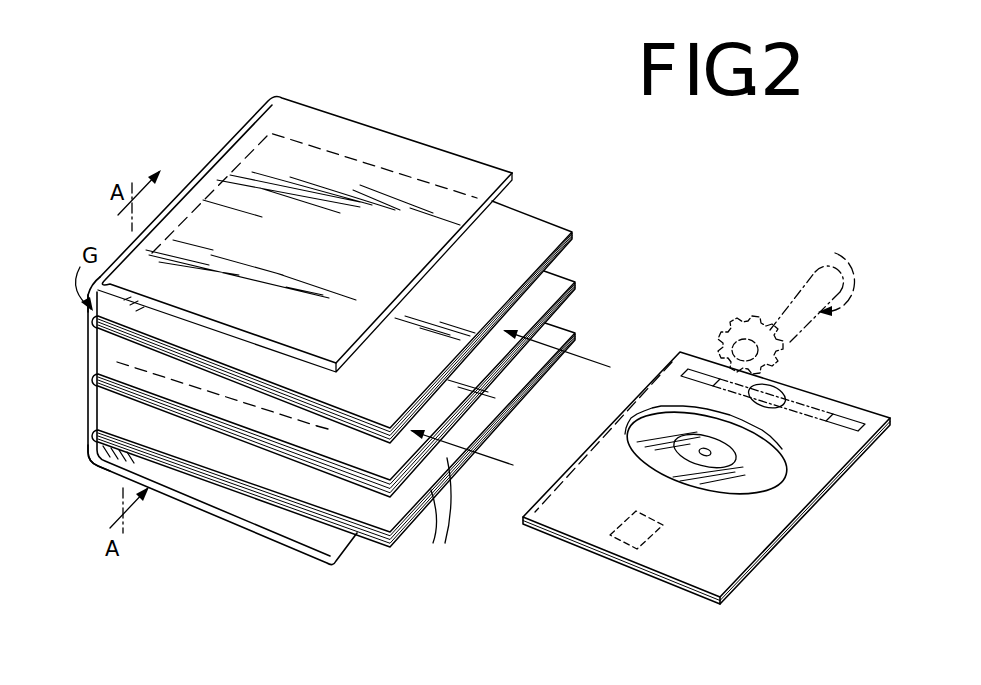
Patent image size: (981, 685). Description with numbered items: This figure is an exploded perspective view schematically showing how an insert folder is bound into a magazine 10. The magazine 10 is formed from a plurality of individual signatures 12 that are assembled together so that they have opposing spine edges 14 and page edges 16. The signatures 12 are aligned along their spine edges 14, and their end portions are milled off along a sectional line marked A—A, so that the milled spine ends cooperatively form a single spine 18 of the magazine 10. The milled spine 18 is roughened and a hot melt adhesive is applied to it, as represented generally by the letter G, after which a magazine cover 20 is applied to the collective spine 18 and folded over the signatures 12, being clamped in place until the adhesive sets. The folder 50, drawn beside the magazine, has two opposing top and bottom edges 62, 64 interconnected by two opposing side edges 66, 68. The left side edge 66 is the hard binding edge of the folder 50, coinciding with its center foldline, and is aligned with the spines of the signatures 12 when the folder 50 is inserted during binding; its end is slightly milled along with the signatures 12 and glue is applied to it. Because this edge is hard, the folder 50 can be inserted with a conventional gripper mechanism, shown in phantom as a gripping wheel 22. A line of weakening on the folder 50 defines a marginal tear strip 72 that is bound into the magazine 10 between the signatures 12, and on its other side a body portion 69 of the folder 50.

The magazine 10 is at (285, 295).
The signatures 12 is at (578, 333).
The spine edges 14 is at (97, 330).
The page edges 16 is at (447, 515).
The spine 18 is at (91, 359).
The magazine cover 20 is at (403, 169).
The gripping wheel 22 is at (745, 318).
The folder 50 is at (706, 461).
The top edge 62 is at (833, 400).
The bottom edge 64 is at (673, 583).
The left side edge 66 is at (650, 383).
The right side edge 68 is at (817, 497).
The body portion 69 is at (727, 548).
The marginal tear strip 72 is at (678, 350).